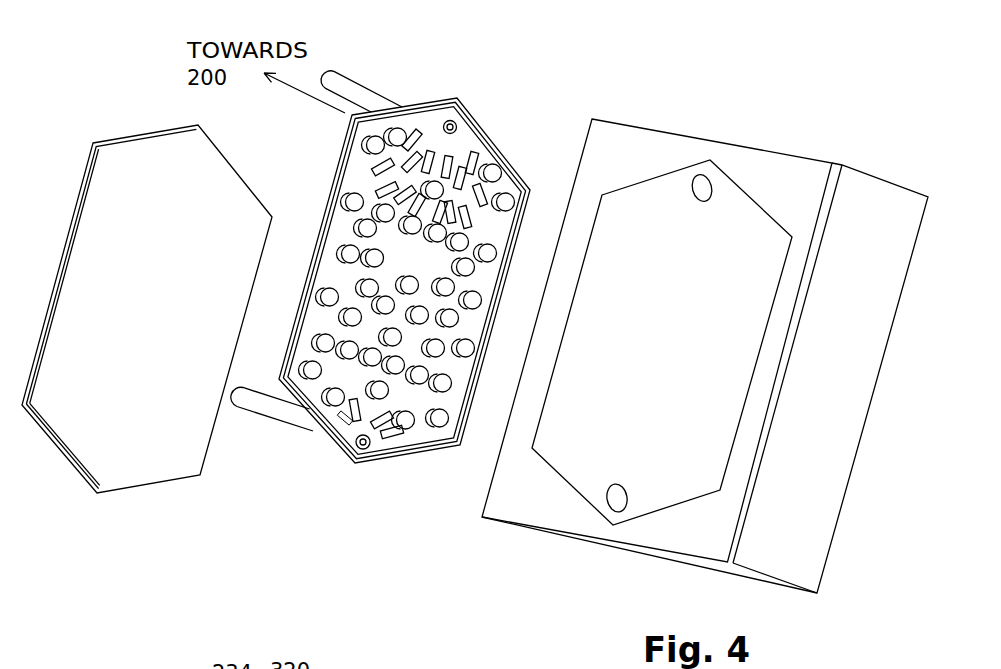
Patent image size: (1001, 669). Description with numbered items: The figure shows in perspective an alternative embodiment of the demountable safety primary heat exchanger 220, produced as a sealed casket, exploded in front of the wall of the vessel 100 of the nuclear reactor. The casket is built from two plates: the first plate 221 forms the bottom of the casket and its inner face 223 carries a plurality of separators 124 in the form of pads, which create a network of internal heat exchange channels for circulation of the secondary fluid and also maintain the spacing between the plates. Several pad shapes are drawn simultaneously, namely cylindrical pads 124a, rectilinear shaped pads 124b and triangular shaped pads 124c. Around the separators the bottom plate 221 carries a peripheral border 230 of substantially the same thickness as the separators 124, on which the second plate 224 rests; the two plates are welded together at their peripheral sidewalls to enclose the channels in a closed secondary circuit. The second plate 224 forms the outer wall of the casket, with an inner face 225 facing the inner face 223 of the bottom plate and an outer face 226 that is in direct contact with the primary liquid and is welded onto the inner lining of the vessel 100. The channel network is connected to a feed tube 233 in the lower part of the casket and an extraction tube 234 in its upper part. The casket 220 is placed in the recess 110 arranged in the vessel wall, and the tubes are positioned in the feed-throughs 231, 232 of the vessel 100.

The vessel 100 is at (705, 358).
The recess 110 is at (553, 470).
The separators 124 is at (425, 226).
The cylindrical pads 124a is at (362, 190).
The rectilinear shaped pads 124b is at (491, 160).
The triangular shaped pads 124c is at (420, 140).
The safety primary heat exchanger 220 is at (422, 288).
The first plate 221 is at (312, 388).
The inner face 223 is at (420, 437).
The second plate 224 is at (154, 478).
The inner face 225 is at (141, 318).
The outer face 226 is at (125, 157).
The peripheral border 230 is at (530, 187).
The feed-through 231 is at (608, 502).
The feed-through 232 is at (699, 182).
The feed tube 233 is at (273, 410).
The extraction tube 234 is at (352, 82).